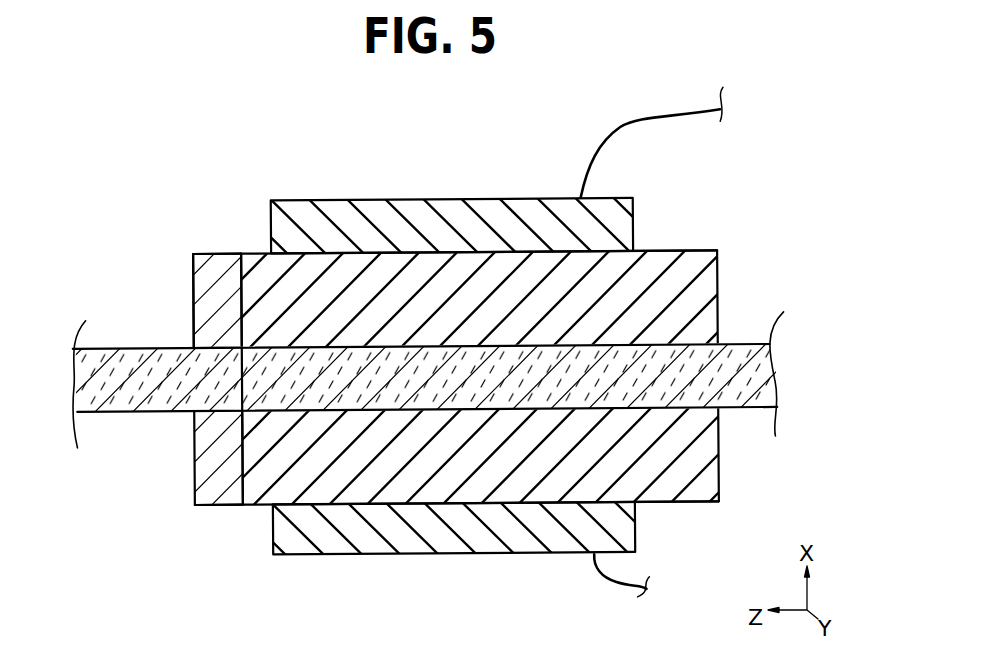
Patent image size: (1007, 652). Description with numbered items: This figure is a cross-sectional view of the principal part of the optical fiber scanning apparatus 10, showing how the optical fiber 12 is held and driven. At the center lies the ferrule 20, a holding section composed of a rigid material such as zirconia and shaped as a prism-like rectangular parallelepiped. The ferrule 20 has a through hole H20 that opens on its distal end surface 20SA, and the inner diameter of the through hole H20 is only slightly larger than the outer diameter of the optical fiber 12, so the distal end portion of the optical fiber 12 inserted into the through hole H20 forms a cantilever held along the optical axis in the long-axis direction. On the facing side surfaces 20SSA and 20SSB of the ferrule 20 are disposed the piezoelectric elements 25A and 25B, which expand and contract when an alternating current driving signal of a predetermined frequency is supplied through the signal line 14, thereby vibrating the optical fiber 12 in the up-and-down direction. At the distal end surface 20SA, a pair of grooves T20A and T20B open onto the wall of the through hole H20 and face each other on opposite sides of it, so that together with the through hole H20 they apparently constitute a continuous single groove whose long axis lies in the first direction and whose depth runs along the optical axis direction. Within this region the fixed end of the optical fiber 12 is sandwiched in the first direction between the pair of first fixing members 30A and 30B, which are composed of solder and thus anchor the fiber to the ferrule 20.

The optical fiber scanning apparatus 10 is at (82, 222).
The optical fiber 12 is at (748, 344).
The signal line 14 is at (630, 124).
The ferrule 20 is at (702, 251).
The distal end surface 20SA is at (183, 263).
The side surface 20SSA is at (665, 243).
The side surface 20SSB is at (662, 512).
The piezoelectric element 25A is at (335, 201).
The piezoelectric element 25B is at (320, 555).
The first fixing member 30A is at (220, 254).
The first fixing member 30B is at (227, 505).
The through hole H20 is at (184, 381).
The groove T20A is at (184, 323).
The groove T20B is at (184, 461).